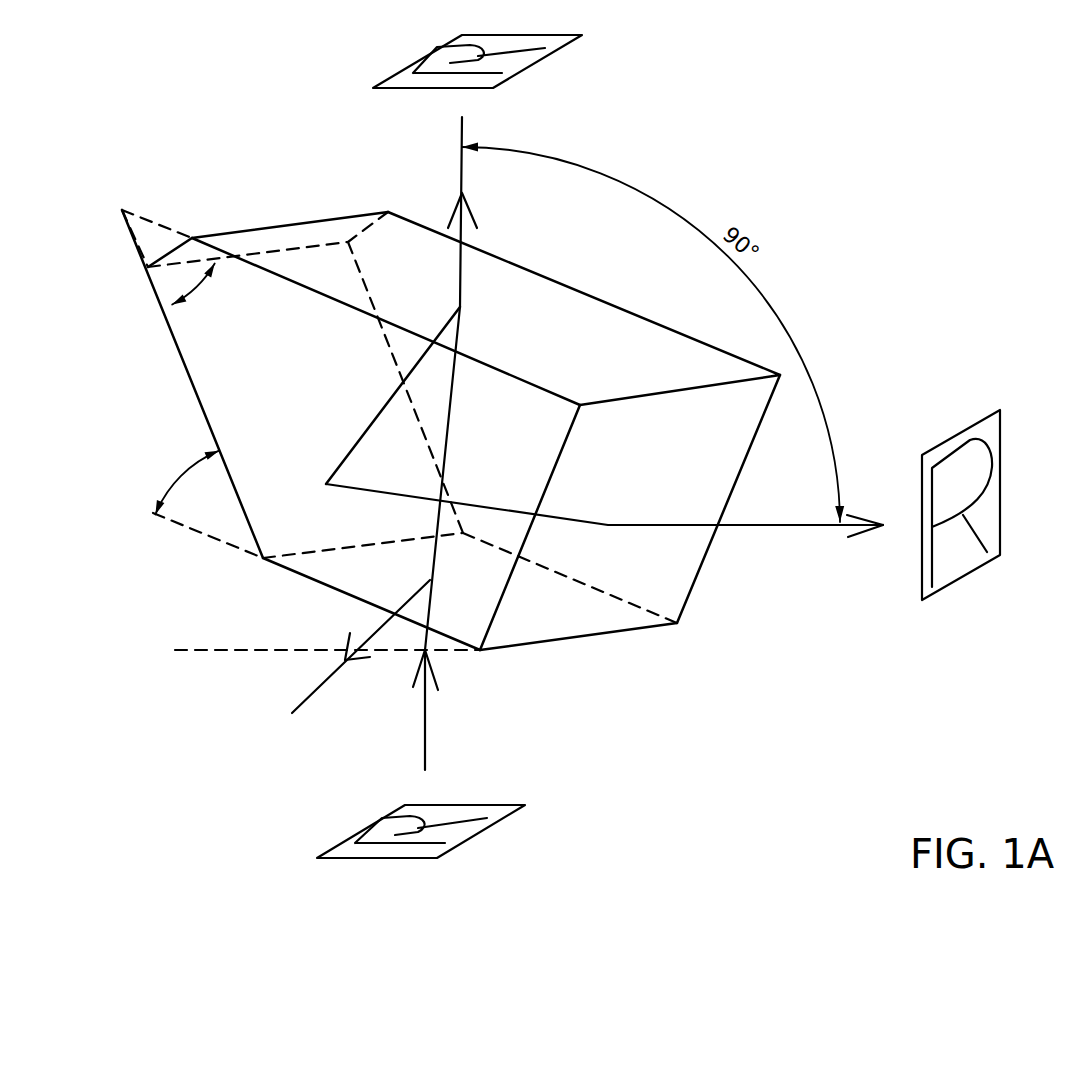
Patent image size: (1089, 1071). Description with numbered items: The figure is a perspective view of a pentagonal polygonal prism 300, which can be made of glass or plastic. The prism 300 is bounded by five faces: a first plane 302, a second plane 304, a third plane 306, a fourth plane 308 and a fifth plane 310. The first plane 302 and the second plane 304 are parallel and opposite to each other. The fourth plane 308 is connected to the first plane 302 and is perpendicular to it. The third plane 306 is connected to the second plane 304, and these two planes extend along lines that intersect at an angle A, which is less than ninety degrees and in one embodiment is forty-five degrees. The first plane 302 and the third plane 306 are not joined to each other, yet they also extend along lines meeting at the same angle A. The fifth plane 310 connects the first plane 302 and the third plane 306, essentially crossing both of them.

The polygonal prism 300 is at (160, 722).
The first plane 302 is at (618, 358).
The second plane 304 is at (353, 580).
The third plane 306 is at (292, 428).
The fourth plane 308 is at (633, 553).
The fifth plane 310 is at (300, 235).